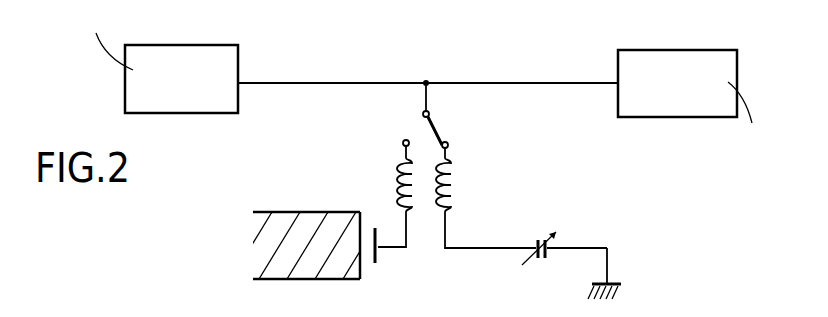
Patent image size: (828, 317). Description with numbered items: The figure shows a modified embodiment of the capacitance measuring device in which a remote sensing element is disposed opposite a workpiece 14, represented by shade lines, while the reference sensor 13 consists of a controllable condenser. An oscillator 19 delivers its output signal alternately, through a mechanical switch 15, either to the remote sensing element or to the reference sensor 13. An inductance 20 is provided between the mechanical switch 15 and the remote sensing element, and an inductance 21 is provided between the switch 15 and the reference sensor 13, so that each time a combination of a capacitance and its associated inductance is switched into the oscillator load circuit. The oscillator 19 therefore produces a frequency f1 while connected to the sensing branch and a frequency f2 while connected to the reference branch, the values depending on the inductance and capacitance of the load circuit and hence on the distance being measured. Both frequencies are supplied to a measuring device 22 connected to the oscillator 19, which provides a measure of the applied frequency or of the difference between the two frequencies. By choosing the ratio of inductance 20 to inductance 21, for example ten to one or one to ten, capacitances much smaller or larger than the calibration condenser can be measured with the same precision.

The reference sensor 13 is at (550, 242).
The workpiece 14 is at (303, 246).
The mechanical switch 15 is at (437, 130).
The oscillator 19 is at (205, 82).
The inductance 20 is at (393, 188).
The inductance 21 is at (458, 188).
The measuring device 22 is at (660, 87).